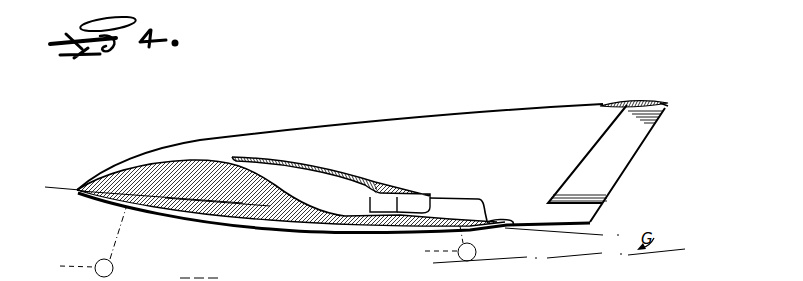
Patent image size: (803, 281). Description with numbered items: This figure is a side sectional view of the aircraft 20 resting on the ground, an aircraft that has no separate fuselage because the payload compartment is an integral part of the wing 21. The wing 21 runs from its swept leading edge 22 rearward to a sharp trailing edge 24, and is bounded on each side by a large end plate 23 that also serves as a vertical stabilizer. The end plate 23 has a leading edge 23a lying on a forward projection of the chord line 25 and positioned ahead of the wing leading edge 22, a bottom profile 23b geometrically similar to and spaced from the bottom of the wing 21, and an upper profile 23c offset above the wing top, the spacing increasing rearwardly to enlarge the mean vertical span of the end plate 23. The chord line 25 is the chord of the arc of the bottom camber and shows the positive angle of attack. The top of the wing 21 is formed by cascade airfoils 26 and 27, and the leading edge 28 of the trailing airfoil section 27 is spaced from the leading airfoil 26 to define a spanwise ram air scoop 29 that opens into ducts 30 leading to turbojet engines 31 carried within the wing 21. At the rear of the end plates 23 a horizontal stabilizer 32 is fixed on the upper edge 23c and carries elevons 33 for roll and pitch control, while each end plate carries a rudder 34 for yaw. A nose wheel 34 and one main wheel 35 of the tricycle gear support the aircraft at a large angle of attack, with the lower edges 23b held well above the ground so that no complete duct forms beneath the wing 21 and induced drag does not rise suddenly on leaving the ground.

The aircraft 20 is at (229, 96).
The wing 21 is at (213, 200).
The swept leading edges 22 is at (80, 197).
The end plates 23 is at (464, 147).
The leading edge of end plate 23a is at (77, 192).
The bottom profile of end plate 23b is at (347, 240).
The upper profile of end plate 23c is at (335, 123).
The trailing edge 24 is at (503, 226).
The chord line 25 is at (77, 190).
The leading airfoil 26 is at (191, 141).
The trailing airfoil section 27 is at (343, 188).
The leading edge of trailing airfoil section 28 is at (237, 158).
The air scoop 29 is at (227, 157).
The ducts 30 is at (368, 182).
The turbojet engines 31 is at (413, 202).
The horizontal stabilizer 32 is at (633, 99).
The elevons 33 is at (680, 92).
The rudder / nose wheel 34 is at (660, 150).
The main wheels 35 is at (437, 243).